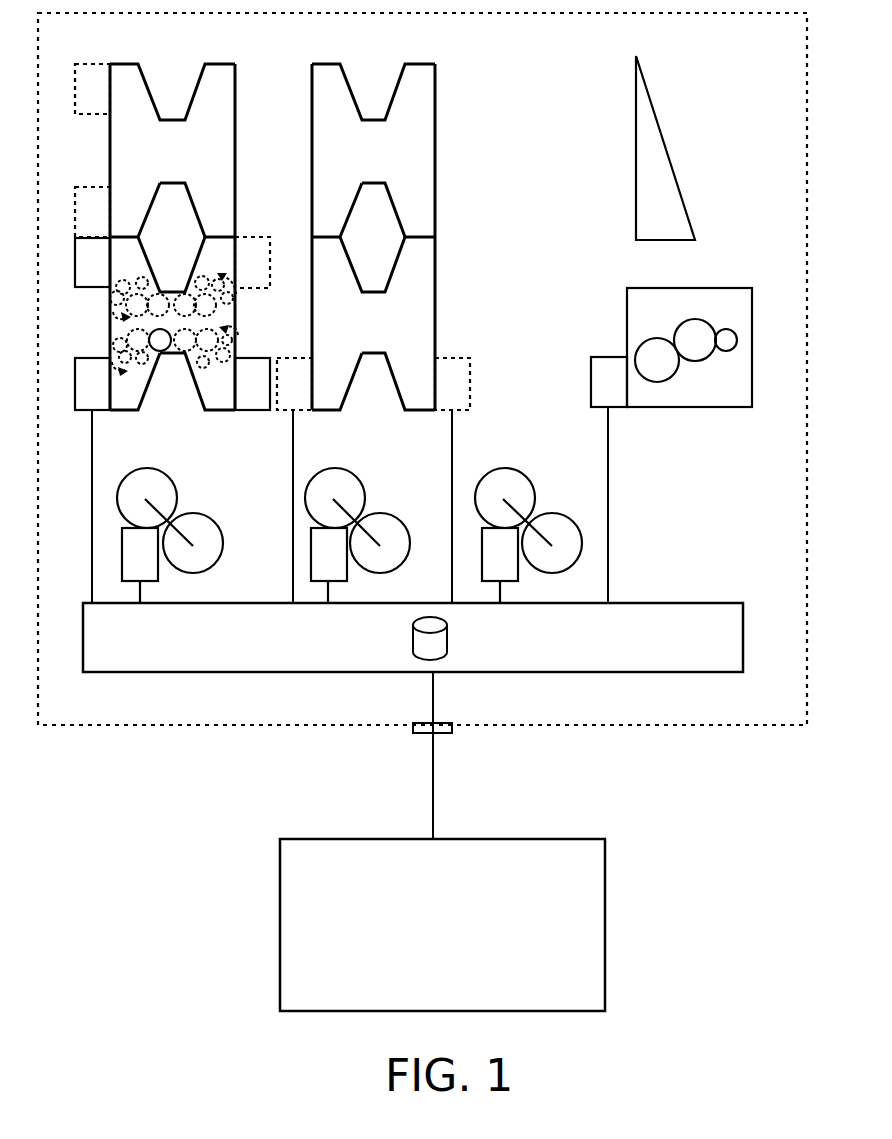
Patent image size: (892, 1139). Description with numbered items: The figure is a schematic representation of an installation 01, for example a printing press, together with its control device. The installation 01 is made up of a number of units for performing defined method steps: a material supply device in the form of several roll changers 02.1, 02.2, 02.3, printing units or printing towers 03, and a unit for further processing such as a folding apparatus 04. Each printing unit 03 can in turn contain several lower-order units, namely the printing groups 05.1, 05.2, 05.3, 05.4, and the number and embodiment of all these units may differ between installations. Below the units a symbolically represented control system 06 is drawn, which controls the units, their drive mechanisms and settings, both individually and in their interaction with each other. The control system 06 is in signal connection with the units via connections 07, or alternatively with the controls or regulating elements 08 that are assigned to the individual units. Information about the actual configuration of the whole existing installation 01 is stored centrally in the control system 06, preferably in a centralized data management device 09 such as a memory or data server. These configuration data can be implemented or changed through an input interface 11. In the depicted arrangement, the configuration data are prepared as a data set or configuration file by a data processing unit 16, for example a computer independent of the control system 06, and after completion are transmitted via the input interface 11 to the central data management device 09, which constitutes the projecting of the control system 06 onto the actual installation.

The installation 01 is at (682, 725).
The roll changer 02.1 is at (188, 503).
The roll changer 02.2 is at (374, 503).
The roll changer 02.3 is at (542, 503).
The printing unit 03 is at (457, 173).
The folding apparatus 04 is at (708, 302).
The printing group 05.1 is at (110, 362).
The printing group 05.2 is at (110, 305).
The printing group 05.3 is at (240, 335).
The printing group 05.4 is at (240, 296).
The control system 06 is at (712, 603).
The connection 07 is at (92, 430).
The control 08 is at (351, 420).
The centralized data management device 09 is at (435, 643).
The input interface 11 is at (450, 730).
The data processing unit 16 is at (605, 905).